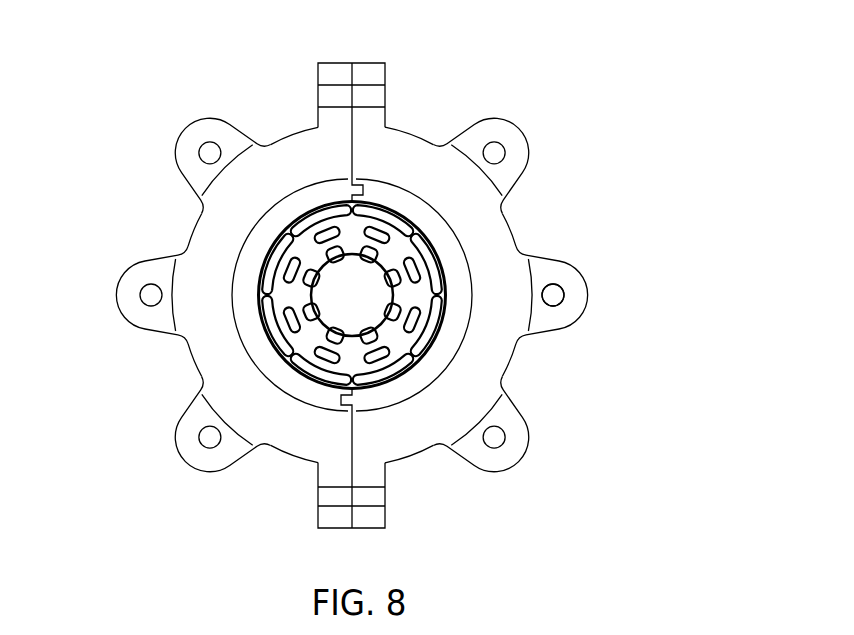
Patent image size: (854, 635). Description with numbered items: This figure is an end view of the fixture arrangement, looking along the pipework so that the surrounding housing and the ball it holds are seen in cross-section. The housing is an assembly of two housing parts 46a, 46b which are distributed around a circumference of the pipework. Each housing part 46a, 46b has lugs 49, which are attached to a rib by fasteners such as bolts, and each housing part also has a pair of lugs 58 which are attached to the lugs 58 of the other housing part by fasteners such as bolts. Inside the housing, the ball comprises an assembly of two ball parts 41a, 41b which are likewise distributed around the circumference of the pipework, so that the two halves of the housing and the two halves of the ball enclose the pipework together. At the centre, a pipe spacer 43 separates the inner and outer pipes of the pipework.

The ball part 41a is at (247, 329).
The ball part 41b is at (458, 274).
The pipe spacer 43 is at (422, 335).
The housing part 46a is at (218, 241).
The housing part 46b is at (483, 220).
The lugs 49 is at (578, 297).
The lugs 58 is at (385, 80).